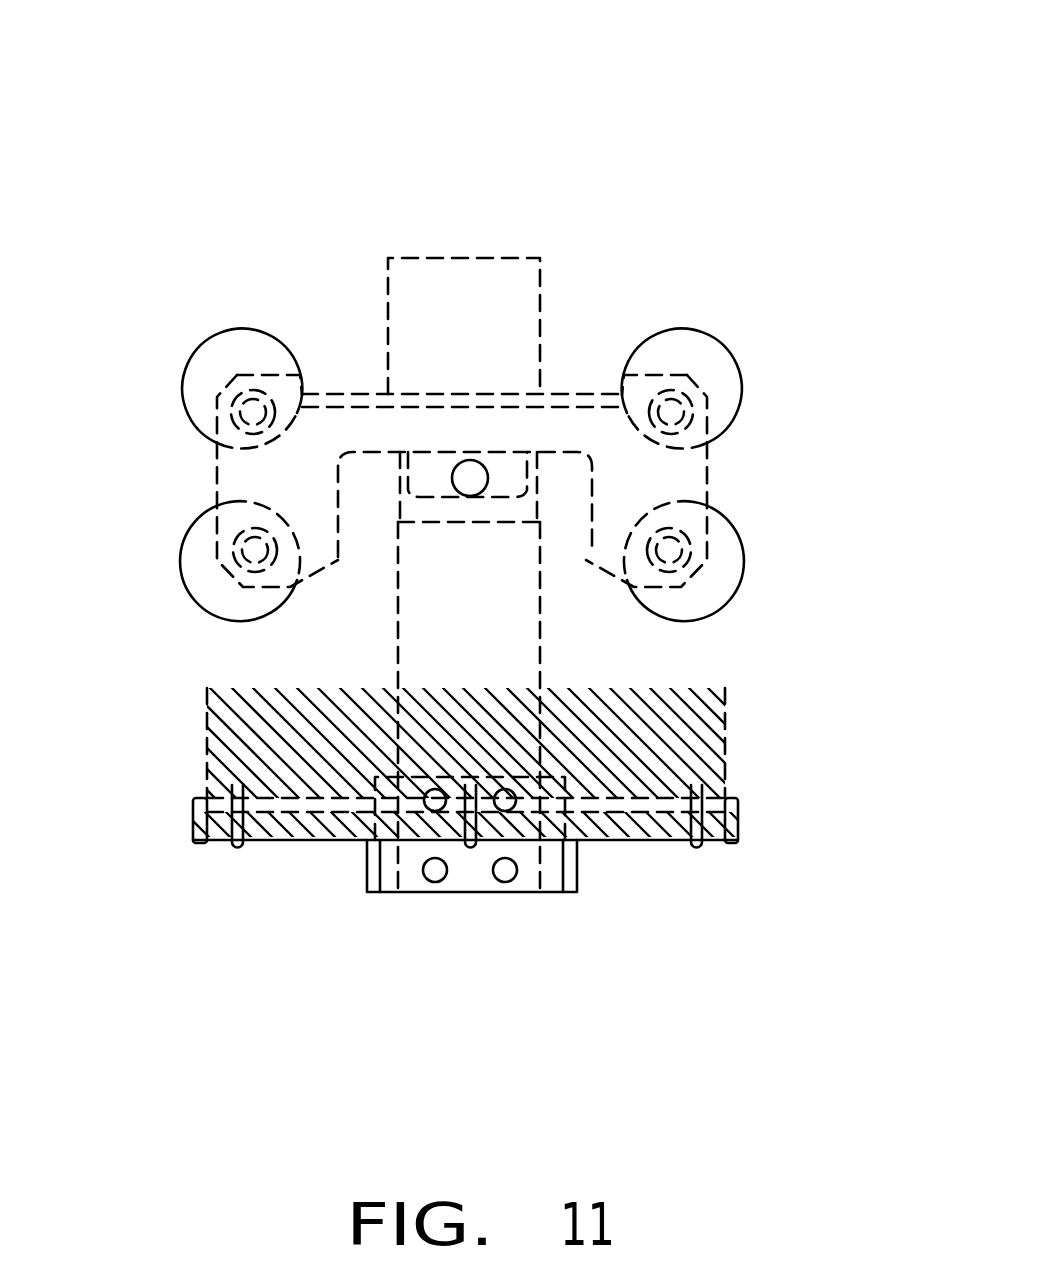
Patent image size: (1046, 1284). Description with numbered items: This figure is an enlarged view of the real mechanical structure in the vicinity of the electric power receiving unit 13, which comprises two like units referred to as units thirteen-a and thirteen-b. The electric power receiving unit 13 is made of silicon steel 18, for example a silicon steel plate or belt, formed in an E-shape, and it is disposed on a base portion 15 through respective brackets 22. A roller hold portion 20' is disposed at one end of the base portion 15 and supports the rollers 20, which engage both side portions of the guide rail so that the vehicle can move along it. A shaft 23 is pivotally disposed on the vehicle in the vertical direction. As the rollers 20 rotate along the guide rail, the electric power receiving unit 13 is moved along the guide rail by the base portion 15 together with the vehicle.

The electric power receiving unit 13 is at (543, 180).
The base portion 15 is at (520, 632).
The silicon steel 18 is at (230, 742).
The rollers 20 is at (465, 427).
The roller hold portion 20' is at (462, 392).
The bracket 22 is at (610, 840).
The shaft 23 is at (450, 466).